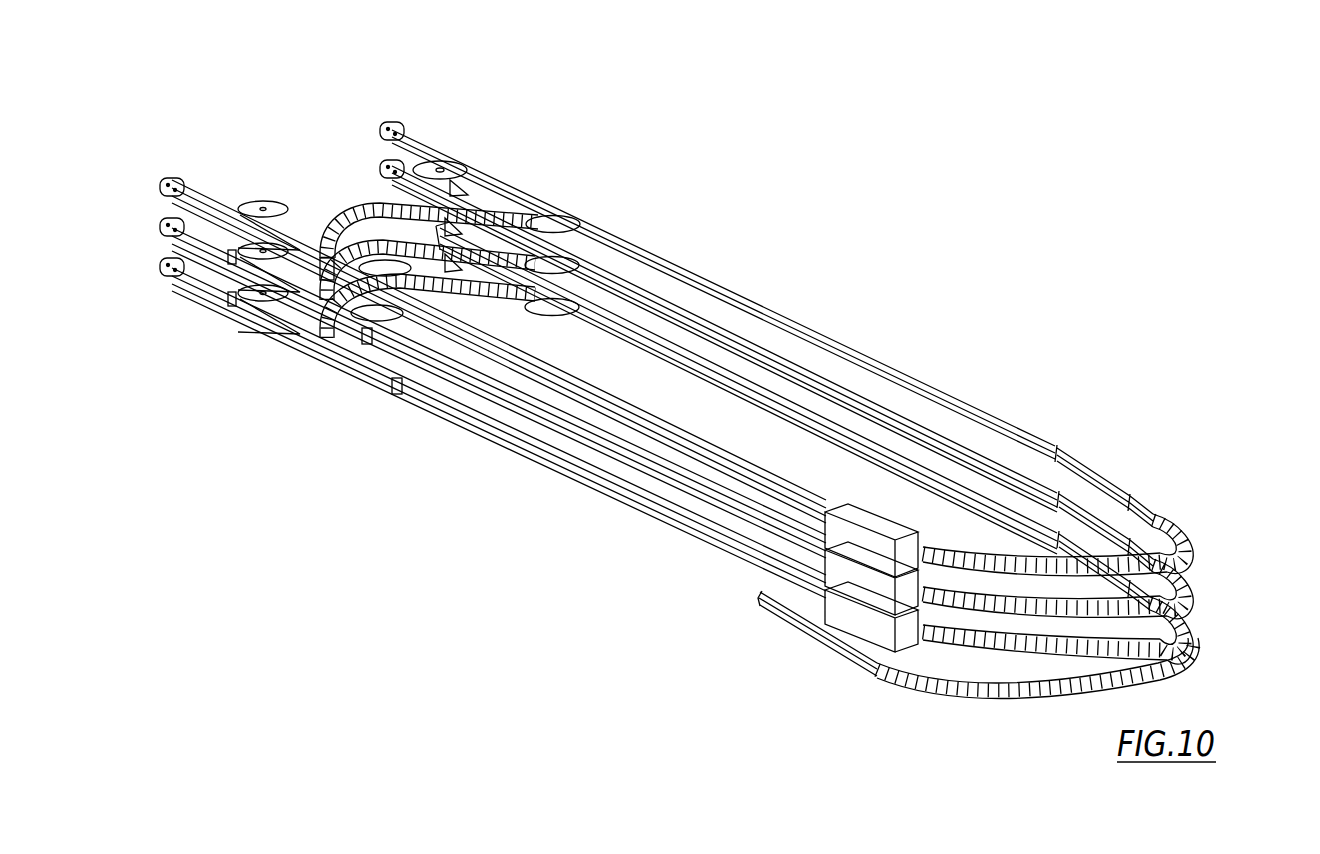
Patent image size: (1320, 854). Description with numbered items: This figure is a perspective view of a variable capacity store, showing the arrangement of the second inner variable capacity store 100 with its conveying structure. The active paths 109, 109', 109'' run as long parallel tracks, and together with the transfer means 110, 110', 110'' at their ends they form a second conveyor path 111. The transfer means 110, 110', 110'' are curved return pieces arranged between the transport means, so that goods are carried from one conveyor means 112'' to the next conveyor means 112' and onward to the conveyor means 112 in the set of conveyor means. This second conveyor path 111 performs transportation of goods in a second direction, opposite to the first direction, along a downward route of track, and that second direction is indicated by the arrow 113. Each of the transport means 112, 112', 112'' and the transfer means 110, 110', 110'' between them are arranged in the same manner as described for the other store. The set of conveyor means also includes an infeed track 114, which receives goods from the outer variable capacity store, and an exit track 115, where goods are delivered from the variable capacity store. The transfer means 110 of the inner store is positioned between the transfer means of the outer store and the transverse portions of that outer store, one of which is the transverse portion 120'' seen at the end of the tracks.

The second inner variable capacity store 100 is at (895, 348).
The active path 109 is at (493, 428).
The active path 109' is at (493, 406).
The active path 109'' is at (493, 386).
The transfer means 110 is at (1091, 630).
The transfer means 110' is at (1095, 589).
The transfer means 110'' is at (1096, 545).
The second conveyor path 111 is at (662, 246).
The conveyor means 112 is at (361, 442).
The conveyor means 112' is at (314, 417).
The conveyor means 112'' is at (262, 382).
The arrow 113 is at (828, 247).
The infeed track 114 is at (1030, 575).
The exit track 115 is at (773, 620).
The transverse portion 120'' is at (398, 173).